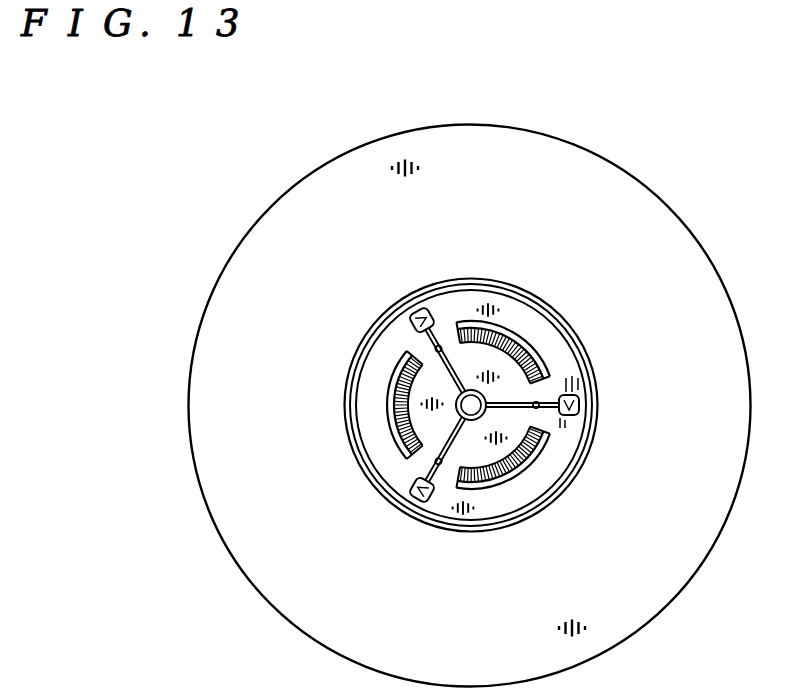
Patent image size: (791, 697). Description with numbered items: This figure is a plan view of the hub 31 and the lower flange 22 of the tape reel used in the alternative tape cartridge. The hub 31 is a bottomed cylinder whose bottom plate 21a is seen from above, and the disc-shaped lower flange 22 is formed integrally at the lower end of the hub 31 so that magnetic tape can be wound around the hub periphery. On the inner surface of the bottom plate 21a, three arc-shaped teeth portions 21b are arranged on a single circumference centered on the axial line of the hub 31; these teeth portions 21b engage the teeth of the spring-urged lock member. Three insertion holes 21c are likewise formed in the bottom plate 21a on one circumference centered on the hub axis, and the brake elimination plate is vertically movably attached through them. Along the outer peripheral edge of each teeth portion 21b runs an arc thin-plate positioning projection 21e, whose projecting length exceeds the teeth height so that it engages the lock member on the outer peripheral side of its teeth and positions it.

The lower flange 22 is at (681, 212).
The hub 31 is at (500, 267).
The bottom plate 21a is at (450, 325).
The teeth portions 21b is at (521, 326).
The insertion holes 21c is at (416, 306).
The positioning projections 21e is at (550, 353).